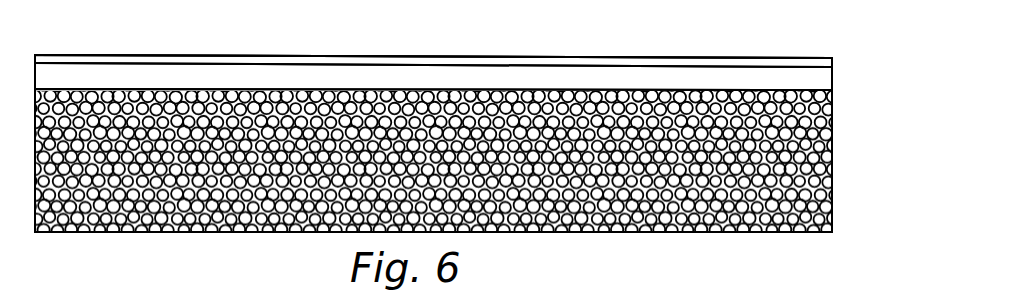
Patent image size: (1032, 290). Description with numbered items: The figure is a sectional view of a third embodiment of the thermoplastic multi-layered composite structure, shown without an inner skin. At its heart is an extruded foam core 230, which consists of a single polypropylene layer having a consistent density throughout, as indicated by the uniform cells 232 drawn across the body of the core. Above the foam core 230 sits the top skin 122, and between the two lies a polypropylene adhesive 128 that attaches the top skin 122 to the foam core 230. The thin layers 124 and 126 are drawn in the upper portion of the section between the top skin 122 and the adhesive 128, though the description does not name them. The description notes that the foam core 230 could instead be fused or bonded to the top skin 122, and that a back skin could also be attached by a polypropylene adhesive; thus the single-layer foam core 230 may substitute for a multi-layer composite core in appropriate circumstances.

The top skin 122 is at (840, 65).
The top film layer 124 is at (633, 63).
The intermediate layer 126 is at (690, 72).
The polypropylene adhesive 128 is at (833, 90).
The extruded foam core 230 is at (435, 38).
The cells 232 is at (633, 132).